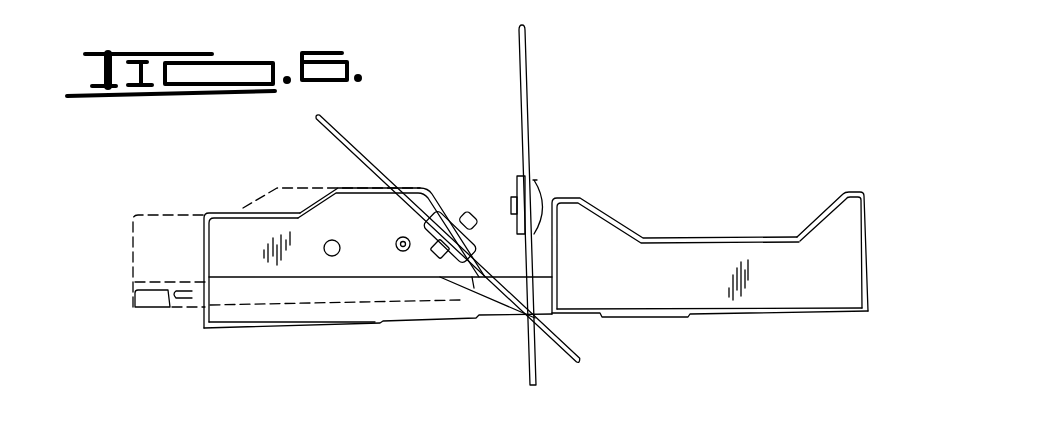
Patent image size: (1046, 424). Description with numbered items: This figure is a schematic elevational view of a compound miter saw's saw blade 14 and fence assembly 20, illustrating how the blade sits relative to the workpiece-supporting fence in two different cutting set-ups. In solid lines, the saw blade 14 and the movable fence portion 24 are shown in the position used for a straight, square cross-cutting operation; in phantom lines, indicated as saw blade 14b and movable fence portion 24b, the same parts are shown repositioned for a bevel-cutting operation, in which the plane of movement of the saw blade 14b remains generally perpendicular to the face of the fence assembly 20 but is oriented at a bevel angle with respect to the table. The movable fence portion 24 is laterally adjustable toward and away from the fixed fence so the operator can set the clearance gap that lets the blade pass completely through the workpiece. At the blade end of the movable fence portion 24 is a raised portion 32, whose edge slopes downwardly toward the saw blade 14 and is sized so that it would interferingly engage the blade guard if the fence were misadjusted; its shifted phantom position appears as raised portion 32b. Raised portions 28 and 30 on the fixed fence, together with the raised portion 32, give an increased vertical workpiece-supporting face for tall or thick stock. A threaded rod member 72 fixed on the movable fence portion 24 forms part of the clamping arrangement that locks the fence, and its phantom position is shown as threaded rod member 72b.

The saw blade 14 is at (527, 41).
The saw blade in bevel-cutting position 14b is at (357, 153).
The fence assembly 20 is at (460, 326).
The movable fence portion 24 is at (223, 236).
The movable fence portion in bevel-cutting position 24b is at (142, 228).
The raised portion 28 is at (570, 213).
The raised portion 30 is at (845, 203).
The raised portion 32 is at (390, 210).
The raised portion in bevel-cutting position 32b is at (272, 186).
The threaded rod member 72 is at (405, 252).
The threaded rod member in bevel-cutting position 72b is at (330, 257).